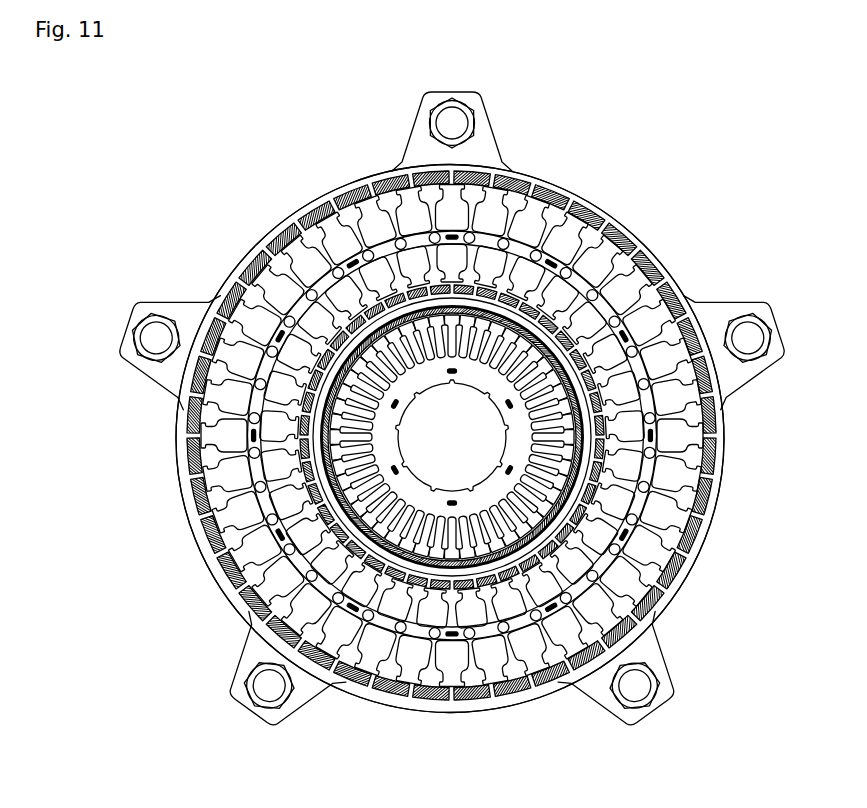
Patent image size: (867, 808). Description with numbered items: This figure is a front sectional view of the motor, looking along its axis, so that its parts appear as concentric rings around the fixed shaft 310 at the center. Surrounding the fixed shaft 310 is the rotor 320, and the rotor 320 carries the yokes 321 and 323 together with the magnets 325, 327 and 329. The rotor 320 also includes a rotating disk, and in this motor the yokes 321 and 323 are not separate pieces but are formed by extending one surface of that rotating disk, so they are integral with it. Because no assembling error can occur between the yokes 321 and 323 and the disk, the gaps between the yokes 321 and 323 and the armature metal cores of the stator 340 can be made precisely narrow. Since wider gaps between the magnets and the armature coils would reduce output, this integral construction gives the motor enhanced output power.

The fixed shaft 310 is at (449, 446).
The rotor 320 is at (347, 167).
The yoke 321 is at (566, 187).
The yoke 323 is at (550, 326).
The magnet 325 is at (620, 233).
The magnet 327 is at (652, 457).
The magnet 329 is at (501, 697).
The stator 340 is at (302, 250).